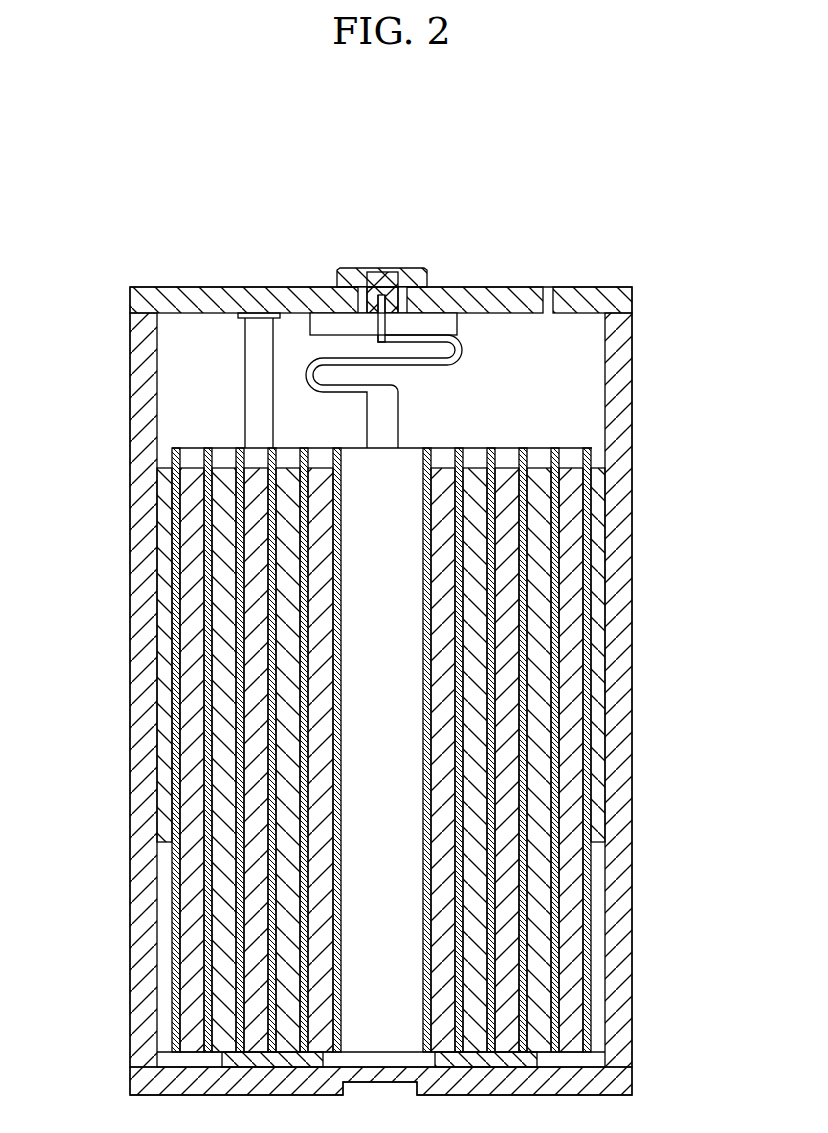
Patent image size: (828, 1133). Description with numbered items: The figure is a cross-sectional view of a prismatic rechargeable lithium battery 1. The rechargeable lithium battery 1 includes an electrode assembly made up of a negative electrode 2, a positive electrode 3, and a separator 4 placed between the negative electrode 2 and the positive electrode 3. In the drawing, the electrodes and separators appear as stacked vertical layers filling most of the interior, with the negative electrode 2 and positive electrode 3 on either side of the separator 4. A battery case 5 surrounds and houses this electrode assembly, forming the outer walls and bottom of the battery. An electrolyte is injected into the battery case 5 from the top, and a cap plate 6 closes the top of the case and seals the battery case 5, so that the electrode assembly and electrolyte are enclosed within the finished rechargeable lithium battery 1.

The rechargeable lithium battery 1 is at (535, 230).
The negative electrode 2 is at (572, 888).
The positive electrode 3 is at (217, 893).
The separator 4 is at (205, 1013).
The battery case 5 is at (148, 371).
The cap plate 6 is at (341, 268).